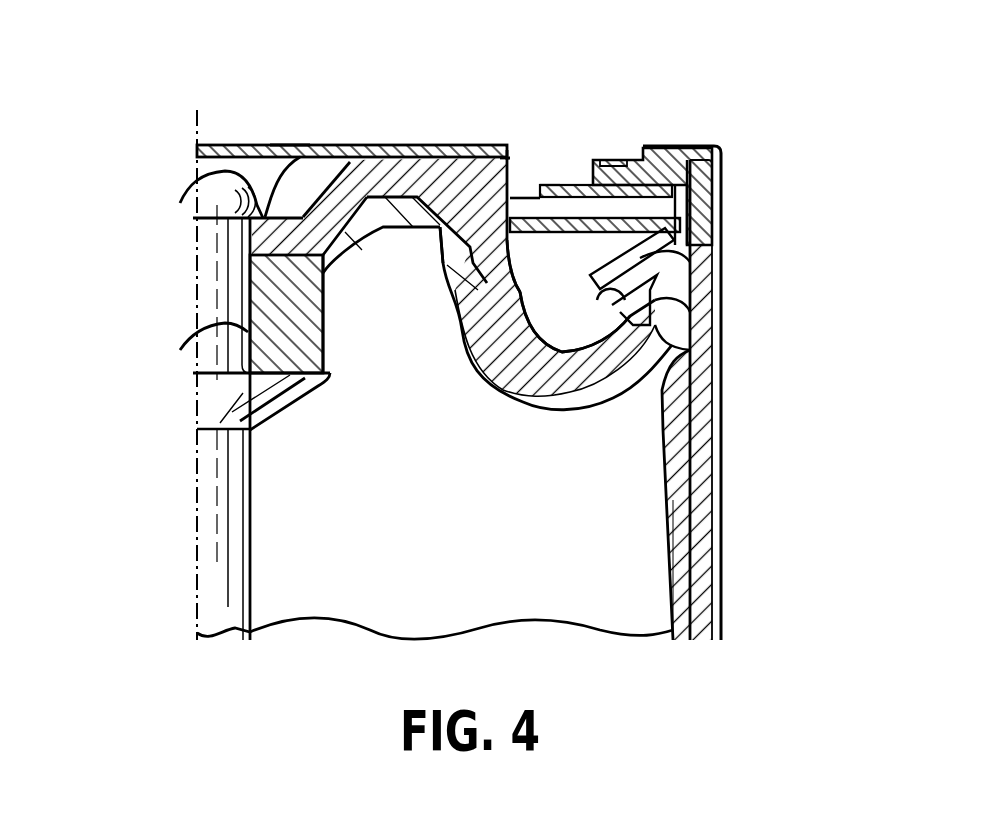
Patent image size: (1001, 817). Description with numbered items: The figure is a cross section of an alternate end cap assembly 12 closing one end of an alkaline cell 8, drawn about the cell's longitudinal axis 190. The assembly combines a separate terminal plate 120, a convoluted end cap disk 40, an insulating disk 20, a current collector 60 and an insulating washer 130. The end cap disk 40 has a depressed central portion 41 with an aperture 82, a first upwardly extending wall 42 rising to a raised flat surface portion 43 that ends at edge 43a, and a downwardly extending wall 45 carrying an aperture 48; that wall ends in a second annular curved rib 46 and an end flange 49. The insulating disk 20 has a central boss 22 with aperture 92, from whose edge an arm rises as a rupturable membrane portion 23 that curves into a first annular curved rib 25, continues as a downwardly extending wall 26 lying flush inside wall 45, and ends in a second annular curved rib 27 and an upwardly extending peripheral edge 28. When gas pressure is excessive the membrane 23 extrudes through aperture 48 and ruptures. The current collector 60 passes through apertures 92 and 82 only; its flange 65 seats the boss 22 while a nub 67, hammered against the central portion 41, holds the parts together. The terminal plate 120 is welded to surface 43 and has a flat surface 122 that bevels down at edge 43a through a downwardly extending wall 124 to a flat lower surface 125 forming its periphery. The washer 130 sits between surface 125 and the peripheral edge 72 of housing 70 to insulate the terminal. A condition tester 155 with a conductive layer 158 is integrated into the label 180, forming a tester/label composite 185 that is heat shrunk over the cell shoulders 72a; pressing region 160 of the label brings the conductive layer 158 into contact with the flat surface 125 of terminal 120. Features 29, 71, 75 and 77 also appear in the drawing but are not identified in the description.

The alkaline cell 8 is at (722, 598).
The end cap assembly 12 is at (506, 146).
The insulating disk 20 is at (327, 338).
The boss 22 is at (325, 378).
The rupturable membrane portion 23 is at (328, 288).
The first annular curved rib 25 is at (405, 230).
The downwardly extending wall 26 is at (462, 323).
The second annular curved rib 27 is at (528, 406).
The upwardly extending peripheral edge 28 is at (722, 276).
The clip hook 29 is at (722, 248).
The end cap disk 40 is at (425, 145).
The depressed central portion 41 is at (320, 145).
The first upwardly extending wall 42 is at (350, 145).
The raised flat surface portion 43 is at (395, 145).
The edge of flat surface 43a is at (512, 145).
The downwardly extending wall 45 is at (550, 182).
The second annular curved rib 46 is at (552, 305).
The aperture 48 is at (508, 285).
The end flange 49 is at (722, 316).
The current collector 60 is at (250, 536).
The flange 65 is at (284, 416).
The nub 67 is at (197, 197).
The housing 70 is at (722, 542).
The liner upper end 71 is at (722, 348).
The peripheral edge of housing 72 is at (603, 262).
The cell shoulders 72a is at (721, 217).
The sloped arm 75 is at (722, 380).
The arm edge 77 is at (722, 462).
The aperture 82 is at (198, 245).
The aperture 92 is at (247, 331).
The terminal plate 120 is at (228, 143).
The flat surface 122 is at (290, 145).
The downwardly extending wall 124 is at (548, 184).
The flat lower surface 125 is at (572, 160).
The insulating washer 130 is at (722, 188).
The condition tester 155 is at (722, 490).
The conductive layer 158 is at (633, 158).
The region of the label 160 is at (608, 162).
The label 180 is at (722, 432).
The tester/label composite 185 is at (722, 512).
The longitudinal axis 190 is at (195, 112).